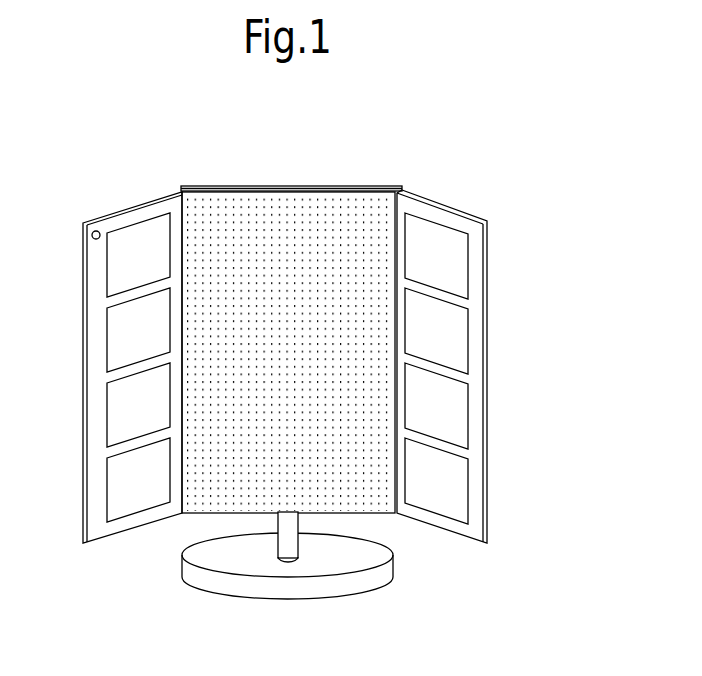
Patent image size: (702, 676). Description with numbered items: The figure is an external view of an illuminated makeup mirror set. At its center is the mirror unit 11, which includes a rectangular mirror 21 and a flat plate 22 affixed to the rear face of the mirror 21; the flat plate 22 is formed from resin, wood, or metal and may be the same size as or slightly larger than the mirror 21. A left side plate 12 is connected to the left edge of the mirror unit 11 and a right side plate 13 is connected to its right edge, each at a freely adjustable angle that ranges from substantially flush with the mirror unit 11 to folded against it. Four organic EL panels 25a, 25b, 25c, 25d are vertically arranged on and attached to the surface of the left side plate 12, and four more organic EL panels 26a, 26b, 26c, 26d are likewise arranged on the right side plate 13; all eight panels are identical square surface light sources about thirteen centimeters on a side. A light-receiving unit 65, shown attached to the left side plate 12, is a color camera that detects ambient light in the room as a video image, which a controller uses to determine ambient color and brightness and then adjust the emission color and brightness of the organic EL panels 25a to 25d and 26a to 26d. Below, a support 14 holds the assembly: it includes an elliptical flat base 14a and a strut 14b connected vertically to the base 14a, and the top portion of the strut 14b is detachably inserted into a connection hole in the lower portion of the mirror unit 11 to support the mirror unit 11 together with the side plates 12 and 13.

The mirror unit 11 is at (291, 315).
The left side plate 12 is at (103, 345).
The right side plate 13 is at (477, 359).
The mirror 21 is at (291, 319).
The flat plate 22 is at (322, 188).
The light-receiving unit 65 is at (93, 230).
The organic EL panel 25a is at (115, 268).
The organic EL panel 25b is at (115, 343).
The organic EL panel 25c is at (115, 413).
The organic EL panel 25d is at (115, 483).
The organic EL panel 26a is at (462, 265).
The organic EL panel 26b is at (458, 340).
The organic EL panel 26c is at (458, 415).
The organic EL panel 26d is at (458, 489).
The support 14 is at (304, 573).
The base 14a is at (192, 568).
The strut 14b is at (281, 552).